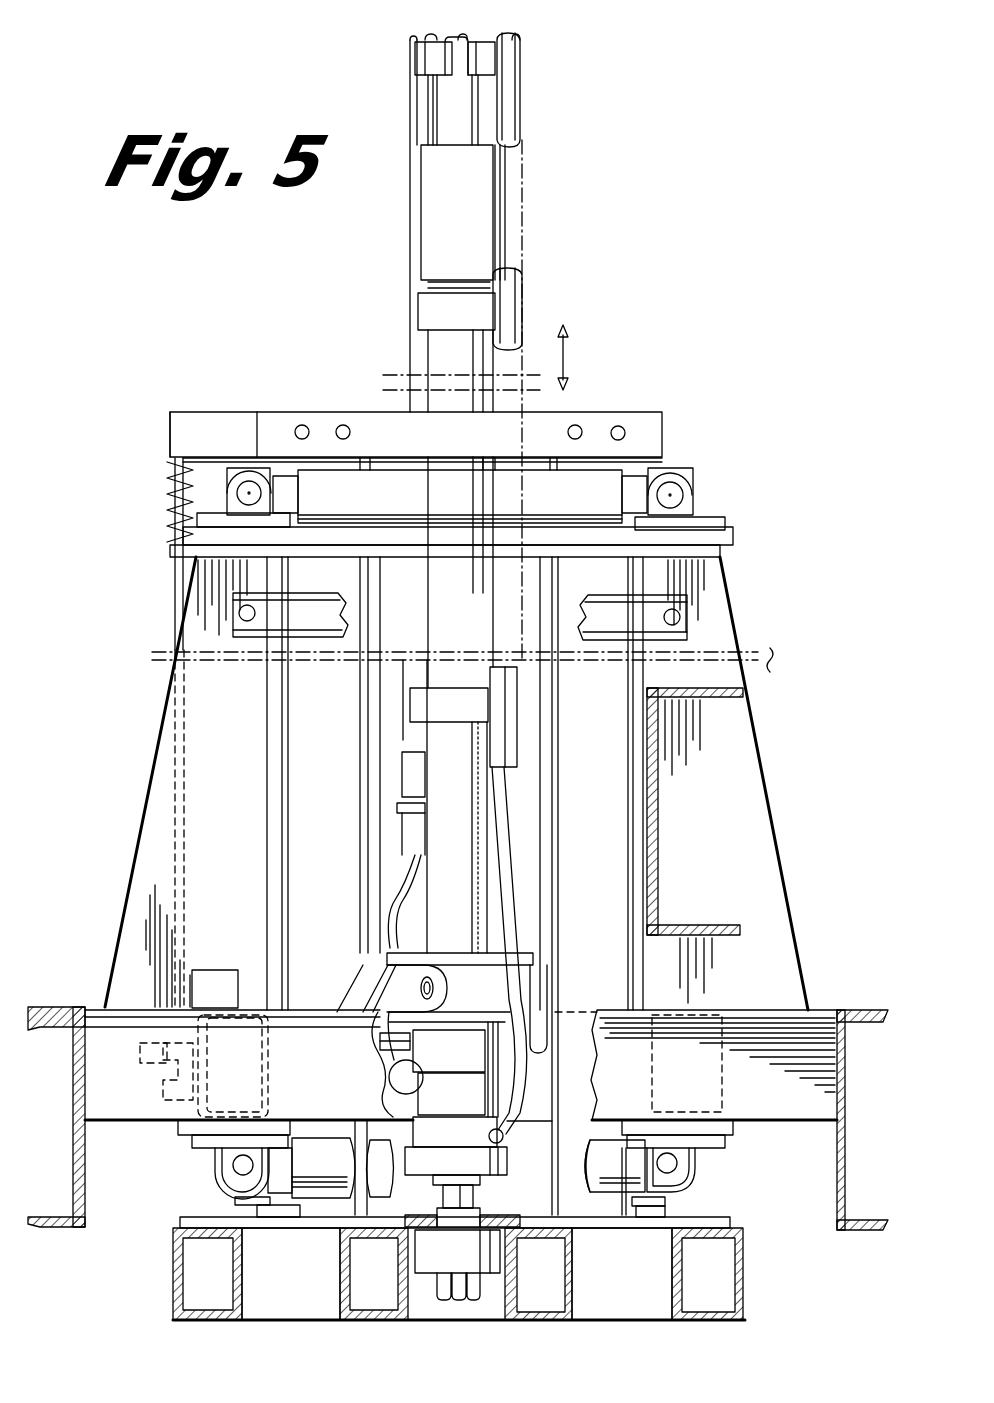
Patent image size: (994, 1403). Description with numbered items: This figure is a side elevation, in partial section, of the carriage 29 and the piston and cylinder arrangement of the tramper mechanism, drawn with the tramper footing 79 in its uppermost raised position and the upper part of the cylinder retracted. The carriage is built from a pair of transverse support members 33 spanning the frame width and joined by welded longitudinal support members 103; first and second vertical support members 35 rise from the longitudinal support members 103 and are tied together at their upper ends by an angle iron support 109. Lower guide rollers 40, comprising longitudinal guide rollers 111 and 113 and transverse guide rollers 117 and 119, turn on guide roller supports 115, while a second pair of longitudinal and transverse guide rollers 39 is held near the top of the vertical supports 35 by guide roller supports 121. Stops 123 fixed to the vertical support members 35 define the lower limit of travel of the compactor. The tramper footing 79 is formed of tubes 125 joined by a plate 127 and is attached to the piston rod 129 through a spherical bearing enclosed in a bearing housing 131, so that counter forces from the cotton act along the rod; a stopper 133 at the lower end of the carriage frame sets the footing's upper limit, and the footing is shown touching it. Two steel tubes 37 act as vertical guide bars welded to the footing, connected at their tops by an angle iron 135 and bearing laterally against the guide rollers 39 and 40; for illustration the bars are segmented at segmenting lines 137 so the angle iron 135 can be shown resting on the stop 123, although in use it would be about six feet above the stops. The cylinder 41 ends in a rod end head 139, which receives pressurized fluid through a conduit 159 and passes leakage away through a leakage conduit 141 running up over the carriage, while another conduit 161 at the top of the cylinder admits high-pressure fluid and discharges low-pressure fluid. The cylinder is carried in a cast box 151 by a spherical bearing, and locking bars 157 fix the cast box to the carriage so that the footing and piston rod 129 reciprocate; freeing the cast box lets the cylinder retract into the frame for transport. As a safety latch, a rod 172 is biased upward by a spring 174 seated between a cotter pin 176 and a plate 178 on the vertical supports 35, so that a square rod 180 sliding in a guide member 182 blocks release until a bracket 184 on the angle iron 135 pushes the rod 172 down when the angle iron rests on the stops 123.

The carriage 29 is at (785, 818).
The transverse support members 33 is at (60, 1007).
The vertical support members 35 is at (250, 753).
The vertical guide bars 37 is at (340, 785).
The upper guide rollers 39 is at (640, 470).
The lower guide rollers 40 is at (690, 1180).
The cylinder 41 is at (468, 842).
The tramper footing 79 is at (745, 1290).
The longitudinal support members 103 is at (105, 1125).
The angle iron support 109 is at (665, 640).
The longitudinal guide roller 111 is at (318, 1190).
The longitudinal guide roller 113 is at (385, 1190).
The guide roller supports 115 is at (250, 1190).
The transverse guide roller 117 is at (220, 1165).
The transverse guide roller 119 is at (692, 1160).
The guide roller supports 121 is at (240, 468).
The stops 123 is at (250, 468).
The tubes 125 is at (240, 1322).
The plate 127 is at (600, 1240).
The piston rod 129 is at (475, 1197).
The bearing housing 131 is at (440, 1300).
The stopper 133 is at (270, 1237).
The angle iron 135 is at (612, 412).
The segmenting lines 137 is at (330, 658).
The rod end head 139 is at (456, 1172).
The leakage conduit 141 is at (525, 130).
The cast box 151 is at (490, 985).
The locking bars 157 is at (355, 985).
The conduit 159 is at (419, 115).
The conduit 161 is at (478, 35).
The rod 172 is at (190, 583).
The spring 174 is at (160, 480).
The cotter pin 176 is at (170, 465).
The plate 178 is at (170, 556).
The square rod 180 is at (160, 1085).
The guide member 182 is at (179, 1066).
The bracket 184 is at (190, 410).